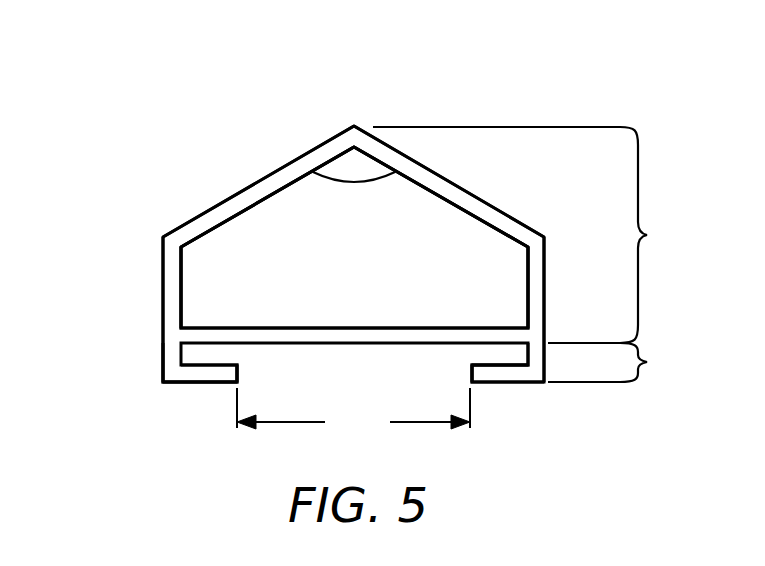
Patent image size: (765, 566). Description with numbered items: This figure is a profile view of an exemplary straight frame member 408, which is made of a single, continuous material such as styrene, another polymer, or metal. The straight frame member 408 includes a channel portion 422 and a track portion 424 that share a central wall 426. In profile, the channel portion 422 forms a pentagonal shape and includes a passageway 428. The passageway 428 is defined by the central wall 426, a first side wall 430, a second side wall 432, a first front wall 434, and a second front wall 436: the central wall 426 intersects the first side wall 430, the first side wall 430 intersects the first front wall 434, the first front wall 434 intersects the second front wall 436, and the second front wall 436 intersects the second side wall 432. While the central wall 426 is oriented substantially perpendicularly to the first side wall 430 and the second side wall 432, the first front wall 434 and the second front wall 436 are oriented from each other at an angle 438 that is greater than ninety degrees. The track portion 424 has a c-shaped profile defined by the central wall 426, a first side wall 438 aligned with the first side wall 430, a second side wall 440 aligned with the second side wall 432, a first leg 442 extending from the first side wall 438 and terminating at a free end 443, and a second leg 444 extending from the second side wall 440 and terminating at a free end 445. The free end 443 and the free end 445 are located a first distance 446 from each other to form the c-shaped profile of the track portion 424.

The straight frame member 408 is at (165, 144).
The channel portion 422 is at (536, 235).
The track portion 424 is at (622, 362).
The central wall 426 is at (354, 334).
The passageway 428 is at (403, 257).
The first side wall 430 is at (540, 308).
The second side wall 432 is at (170, 278).
The first front wall 434 is at (500, 223).
The second front wall 436 is at (287, 173).
The angle 438 is at (354, 182).
The second side wall 440 is at (170, 357).
The first leg 442 is at (498, 373).
The free end 443 is at (470, 372).
The second leg 444 is at (215, 375).
The free end 445 is at (238, 372).
The first distance 446 is at (353, 412).